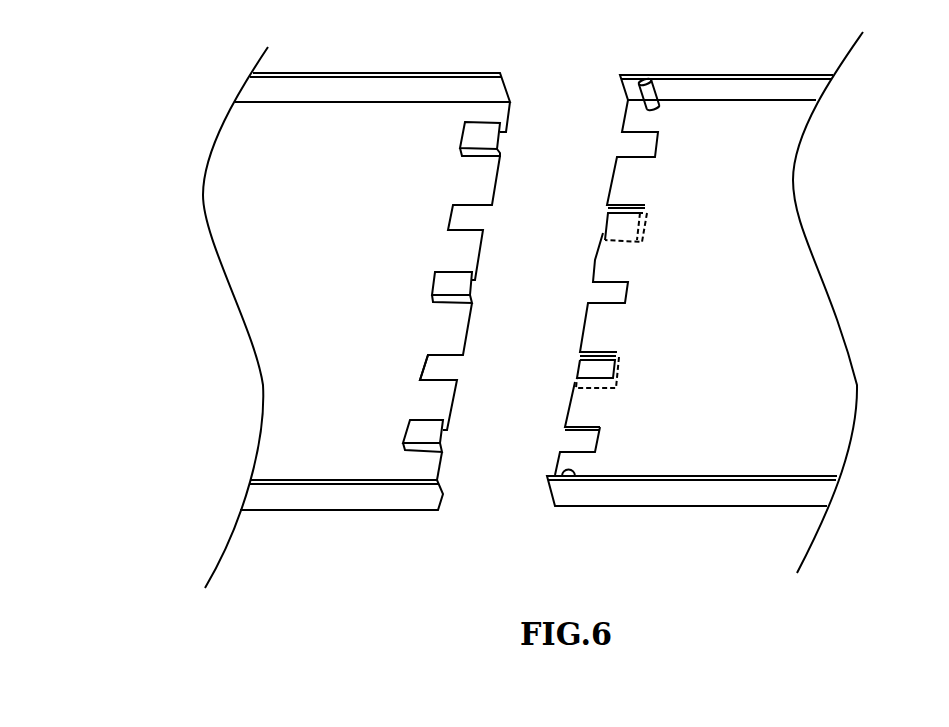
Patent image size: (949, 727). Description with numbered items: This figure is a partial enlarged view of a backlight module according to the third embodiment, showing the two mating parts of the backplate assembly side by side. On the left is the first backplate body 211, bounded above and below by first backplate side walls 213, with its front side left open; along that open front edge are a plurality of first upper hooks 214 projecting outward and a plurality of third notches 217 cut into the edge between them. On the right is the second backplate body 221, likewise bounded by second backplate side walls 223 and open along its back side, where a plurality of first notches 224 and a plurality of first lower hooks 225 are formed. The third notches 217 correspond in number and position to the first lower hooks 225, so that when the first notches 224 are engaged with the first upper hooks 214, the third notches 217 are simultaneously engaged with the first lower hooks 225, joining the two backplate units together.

The first backplate body 211 is at (292, 368).
The first backplate side walls 213 is at (258, 502).
The first upper hooks 214 is at (418, 432).
The third notches 217 is at (435, 372).
The second backplate body 221 is at (788, 263).
The second backplate side walls 223 is at (760, 490).
The first notches 224 is at (587, 442).
The first lower hooks 225 is at (602, 365).